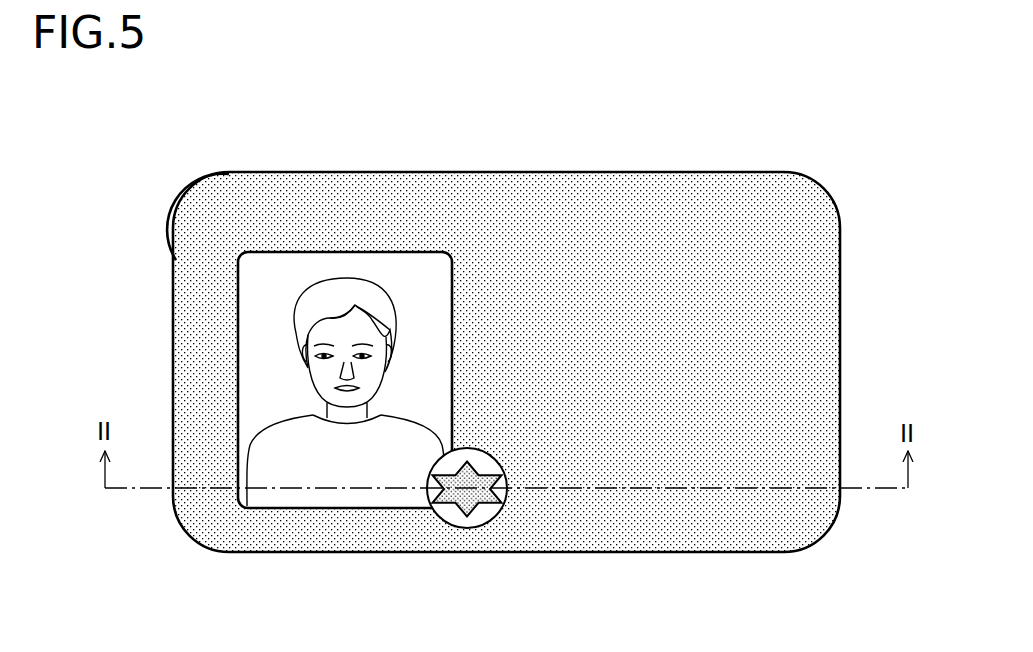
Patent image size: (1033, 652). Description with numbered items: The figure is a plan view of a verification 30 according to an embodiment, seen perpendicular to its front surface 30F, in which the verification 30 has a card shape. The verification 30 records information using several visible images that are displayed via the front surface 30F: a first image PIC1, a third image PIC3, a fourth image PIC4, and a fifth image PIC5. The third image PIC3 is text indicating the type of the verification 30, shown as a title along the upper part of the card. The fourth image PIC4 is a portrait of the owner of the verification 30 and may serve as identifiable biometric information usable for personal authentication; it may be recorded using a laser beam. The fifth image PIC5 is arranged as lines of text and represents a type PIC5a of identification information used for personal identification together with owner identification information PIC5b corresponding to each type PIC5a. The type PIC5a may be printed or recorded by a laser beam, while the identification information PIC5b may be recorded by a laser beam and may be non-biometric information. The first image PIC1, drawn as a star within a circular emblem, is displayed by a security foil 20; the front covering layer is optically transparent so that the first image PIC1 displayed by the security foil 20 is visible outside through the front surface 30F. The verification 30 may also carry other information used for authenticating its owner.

The verification 30 is at (848, 168).
The front surface 30F is at (204, 191).
The third image PIC3 is at (505, 199).
The fourth image PIC4 is at (276, 332).
The fifth image PIC5 is at (722, 453).
The type of identification information PIC5a is at (627, 509).
The owner identification information PIC5b is at (774, 509).
The security foil 20 is at (456, 529).
The first image PIC1 is at (486, 505).